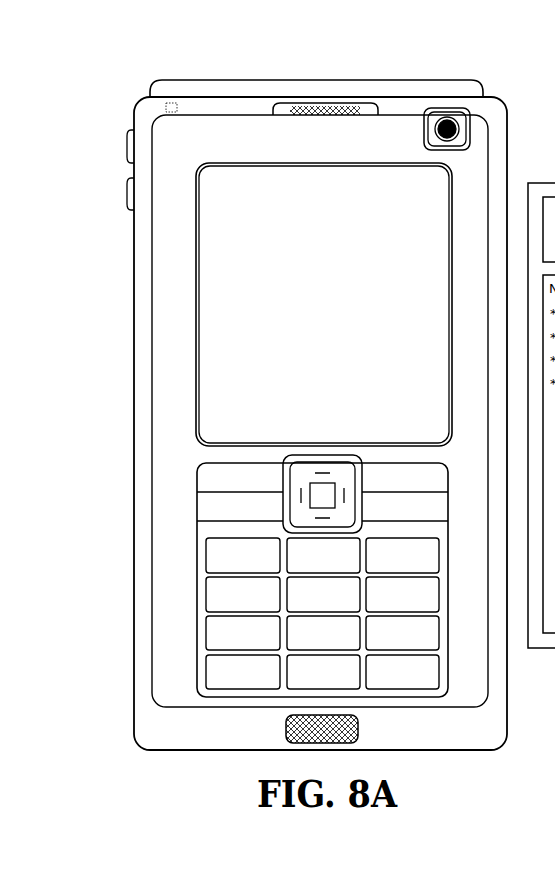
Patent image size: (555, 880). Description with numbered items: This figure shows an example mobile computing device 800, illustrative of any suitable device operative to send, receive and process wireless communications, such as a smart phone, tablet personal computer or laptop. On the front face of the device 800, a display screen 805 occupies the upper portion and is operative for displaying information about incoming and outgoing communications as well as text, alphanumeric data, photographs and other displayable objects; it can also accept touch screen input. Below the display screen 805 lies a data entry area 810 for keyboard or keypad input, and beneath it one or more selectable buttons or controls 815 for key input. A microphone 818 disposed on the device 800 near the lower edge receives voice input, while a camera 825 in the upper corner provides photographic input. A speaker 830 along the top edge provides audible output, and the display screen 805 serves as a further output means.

The mobile computing device 800 is at (126, 100).
The display screen 805 is at (230, 290).
The data entry area 810 is at (197, 503).
The selectable buttons or controls 815 is at (218, 594).
The microphone 818 is at (289, 725).
The camera 825 is at (452, 124).
The speaker 830 is at (325, 113).